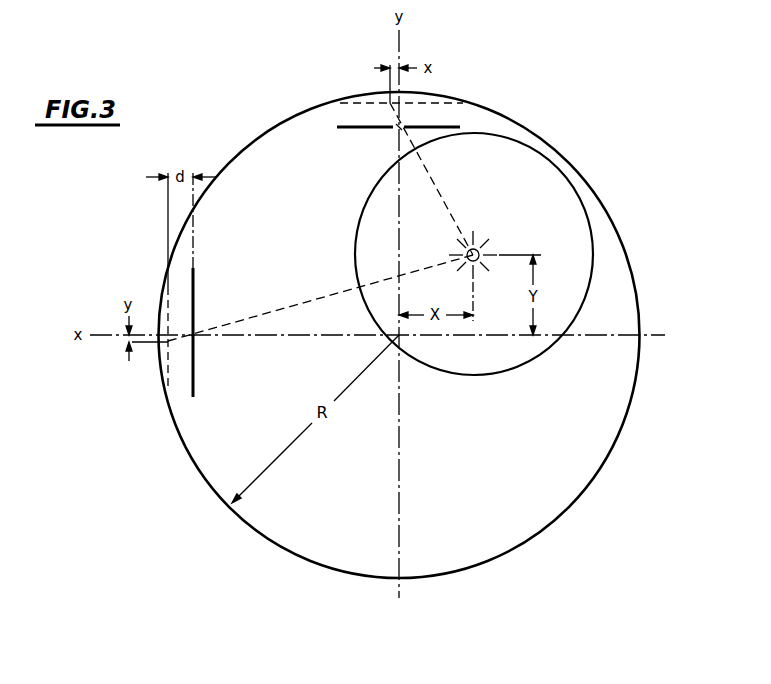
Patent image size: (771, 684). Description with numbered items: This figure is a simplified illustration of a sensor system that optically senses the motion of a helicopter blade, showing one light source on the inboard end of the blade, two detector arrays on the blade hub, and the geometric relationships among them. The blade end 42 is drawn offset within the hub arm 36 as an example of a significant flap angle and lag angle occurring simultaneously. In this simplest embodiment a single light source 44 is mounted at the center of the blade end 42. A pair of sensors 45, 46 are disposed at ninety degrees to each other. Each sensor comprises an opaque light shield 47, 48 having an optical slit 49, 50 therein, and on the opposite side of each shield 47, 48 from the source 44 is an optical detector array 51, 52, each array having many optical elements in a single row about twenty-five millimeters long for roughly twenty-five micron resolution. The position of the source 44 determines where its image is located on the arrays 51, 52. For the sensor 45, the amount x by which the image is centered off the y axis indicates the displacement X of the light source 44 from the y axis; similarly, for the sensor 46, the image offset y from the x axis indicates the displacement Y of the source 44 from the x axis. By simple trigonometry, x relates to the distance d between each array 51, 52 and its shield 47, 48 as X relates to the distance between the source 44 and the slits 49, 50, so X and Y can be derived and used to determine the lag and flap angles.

The hub arm 36 is at (271, 128).
The blade end 42 is at (533, 160).
The light source 44 is at (488, 253).
The sensor 45 is at (466, 111).
The sensor 46 is at (178, 396).
The opaque light shield 47 is at (196, 291).
The opaque light shield 48 is at (337, 129).
The optical slit 49 is at (196, 338).
The optical slit 50 is at (397, 131).
The optical detector array 51 is at (167, 288).
The optical detector array 52 is at (378, 101).